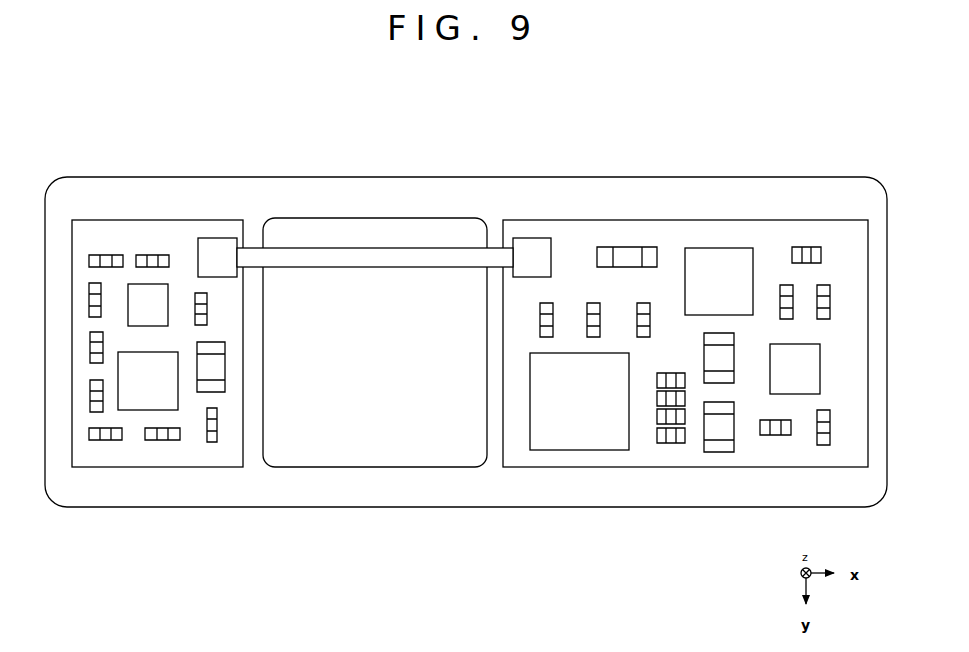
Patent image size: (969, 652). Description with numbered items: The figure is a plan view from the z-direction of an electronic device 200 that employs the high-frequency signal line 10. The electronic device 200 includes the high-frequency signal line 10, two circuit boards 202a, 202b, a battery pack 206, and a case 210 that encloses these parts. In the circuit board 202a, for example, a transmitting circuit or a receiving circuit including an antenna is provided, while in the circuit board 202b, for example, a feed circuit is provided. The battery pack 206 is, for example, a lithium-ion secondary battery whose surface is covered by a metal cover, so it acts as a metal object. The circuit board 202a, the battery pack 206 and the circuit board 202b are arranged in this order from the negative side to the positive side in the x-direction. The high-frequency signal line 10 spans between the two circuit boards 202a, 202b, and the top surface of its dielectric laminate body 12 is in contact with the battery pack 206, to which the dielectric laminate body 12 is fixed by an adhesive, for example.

The electronic device 200 is at (172, 96).
The case 210 is at (316, 177).
The circuit board 202a is at (170, 221).
The circuit board 202b is at (638, 223).
The battery pack 206 is at (363, 227).
The high-frequency signal line 10 is at (387, 268).
The dielectric laminate body 12 is at (332, 267).